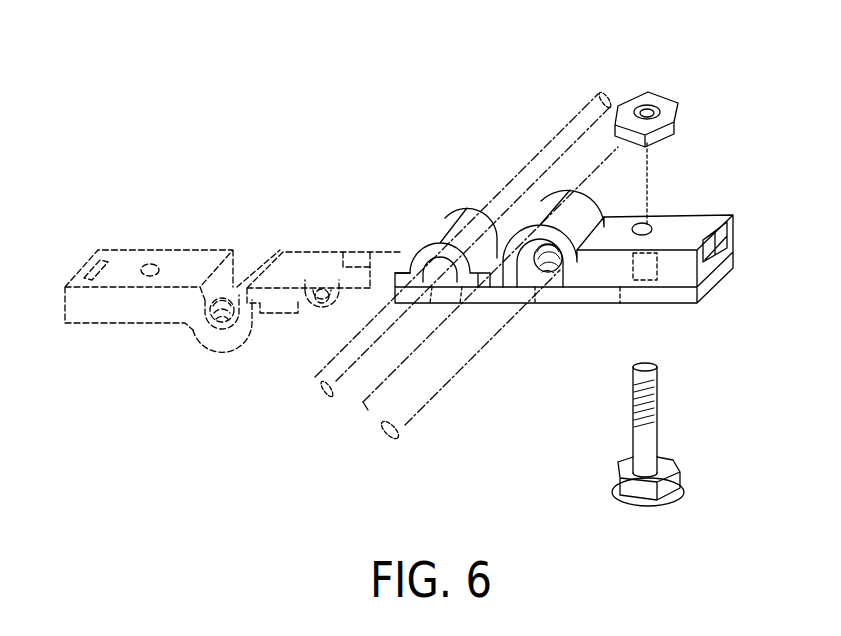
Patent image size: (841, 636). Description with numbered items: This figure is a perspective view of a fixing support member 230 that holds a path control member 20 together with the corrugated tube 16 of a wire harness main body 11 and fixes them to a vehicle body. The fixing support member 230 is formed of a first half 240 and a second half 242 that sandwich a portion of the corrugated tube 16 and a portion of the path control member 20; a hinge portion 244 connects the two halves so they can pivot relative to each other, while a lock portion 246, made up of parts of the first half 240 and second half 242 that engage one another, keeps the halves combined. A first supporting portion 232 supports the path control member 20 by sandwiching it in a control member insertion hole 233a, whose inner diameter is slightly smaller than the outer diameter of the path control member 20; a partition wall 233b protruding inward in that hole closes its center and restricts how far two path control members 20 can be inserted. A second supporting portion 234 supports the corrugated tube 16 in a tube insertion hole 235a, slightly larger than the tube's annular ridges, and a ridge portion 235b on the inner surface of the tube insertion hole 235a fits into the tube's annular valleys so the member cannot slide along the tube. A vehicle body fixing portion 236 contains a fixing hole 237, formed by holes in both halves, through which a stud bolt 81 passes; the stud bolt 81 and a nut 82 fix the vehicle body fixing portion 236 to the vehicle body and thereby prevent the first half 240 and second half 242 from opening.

The fixing support member 230 is at (484, 90).
The path control member 20 is at (466, 280).
The second supporting portion 234 is at (578, 188).
The nut 82 is at (680, 113).
The first supporting portion 232 is at (470, 219).
The partition wall 233b is at (346, 254).
The hinge portion 244 is at (372, 256).
The fixing hole 237 is at (655, 232).
The lock portion 246 is at (735, 270).
The first half 240 is at (147, 330).
The control member insertion hole 233a is at (428, 298).
The tube insertion hole 235a is at (470, 302).
The ridge portion 235b is at (535, 298).
The vehicle body fixing portion 236 is at (632, 311).
The second half 242 is at (686, 312).
The stud bolt 81 is at (660, 432).
The wire harness main body 11 is at (490, 325).
The corrugated tube 16 is at (410, 430).